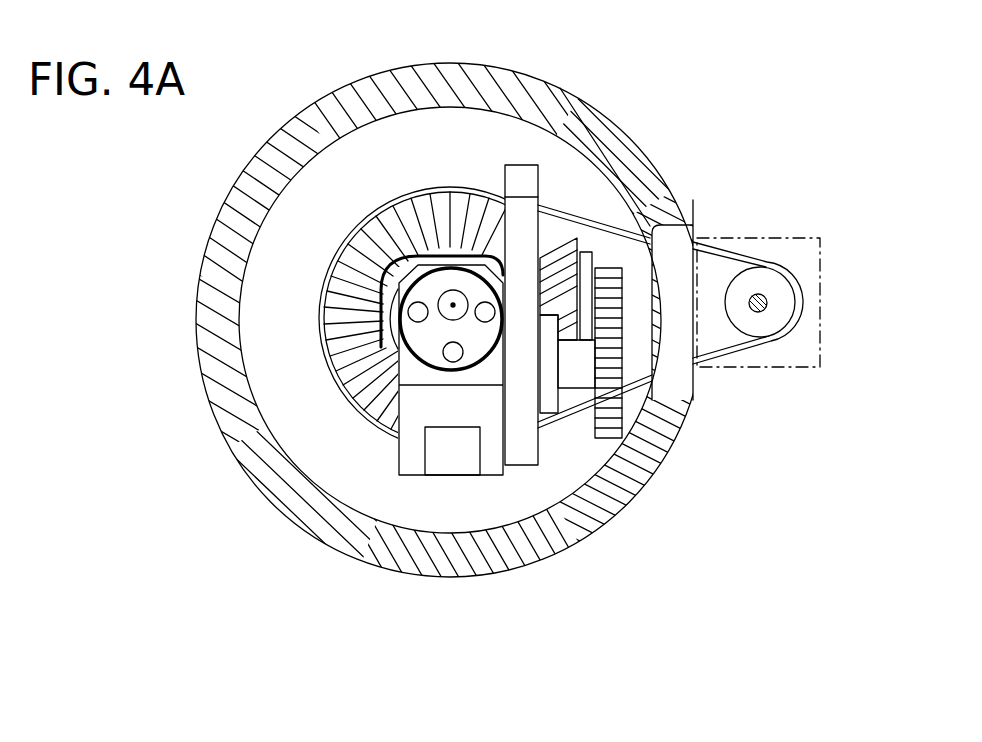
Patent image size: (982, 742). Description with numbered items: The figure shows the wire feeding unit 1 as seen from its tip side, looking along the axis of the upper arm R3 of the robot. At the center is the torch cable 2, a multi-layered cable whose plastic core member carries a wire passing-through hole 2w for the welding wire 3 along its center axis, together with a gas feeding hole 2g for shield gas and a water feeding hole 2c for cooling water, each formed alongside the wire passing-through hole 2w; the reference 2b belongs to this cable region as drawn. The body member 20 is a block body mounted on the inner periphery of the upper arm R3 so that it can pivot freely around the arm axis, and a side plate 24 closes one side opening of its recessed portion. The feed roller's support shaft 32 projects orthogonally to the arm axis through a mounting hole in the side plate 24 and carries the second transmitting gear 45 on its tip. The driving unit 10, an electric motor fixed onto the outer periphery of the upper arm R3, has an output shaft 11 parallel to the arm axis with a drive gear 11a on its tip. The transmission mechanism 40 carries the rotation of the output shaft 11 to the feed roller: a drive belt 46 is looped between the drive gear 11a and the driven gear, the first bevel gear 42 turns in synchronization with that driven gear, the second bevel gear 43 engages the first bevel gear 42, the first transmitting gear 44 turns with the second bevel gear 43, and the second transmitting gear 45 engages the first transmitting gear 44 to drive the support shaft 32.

The wire feeding unit 1 is at (413, 143).
The upper arm R3 is at (566, 106).
The torch cable 2 is at (442, 313).
The holding member of developer carrying body 2b is at (466, 374).
The water feeding hole 2c is at (408, 314).
The gas feeding hole 2g is at (446, 359).
The wire passing-through hole 2w is at (453, 303).
The welding wire 3 is at (395, 338).
The driving unit 10 is at (757, 237).
The output shaft 11 is at (773, 318).
The drive gear 11a is at (756, 313).
The body member 20 is at (495, 478).
The side plate 24 is at (513, 180).
The support shaft 32 is at (577, 372).
The transmission mechanism 40 is at (556, 232).
The first bevel gear 42 is at (367, 238).
The second bevel gear 43 is at (592, 262).
The first transmitting gear 44 is at (620, 285).
The second transmitting gear 45 is at (613, 405).
The drive belt 46 is at (728, 254).